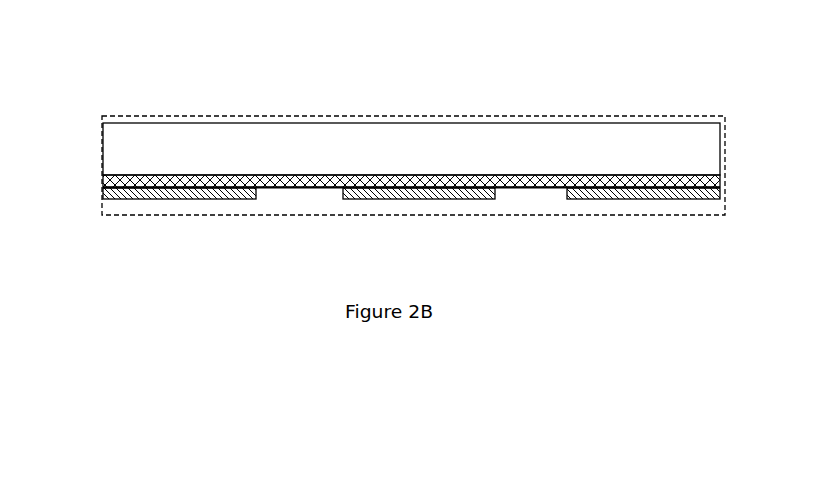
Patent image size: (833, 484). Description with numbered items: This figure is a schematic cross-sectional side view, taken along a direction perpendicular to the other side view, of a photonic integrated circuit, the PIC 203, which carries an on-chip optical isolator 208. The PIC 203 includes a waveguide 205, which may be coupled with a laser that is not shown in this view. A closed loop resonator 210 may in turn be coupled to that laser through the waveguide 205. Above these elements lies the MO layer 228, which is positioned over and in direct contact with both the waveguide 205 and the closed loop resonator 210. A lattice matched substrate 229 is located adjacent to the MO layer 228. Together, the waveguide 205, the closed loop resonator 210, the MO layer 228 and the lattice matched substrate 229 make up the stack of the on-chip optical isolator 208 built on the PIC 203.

The photonic integrated circuit 203 is at (160, 43).
The waveguide 205 is at (725, 197).
The on-chip optical isolator 208 is at (577, 117).
The closed loop resonator 210 is at (256, 199).
The MO layer 228 is at (200, 175).
The lattice matched substrate 229 is at (350, 153).